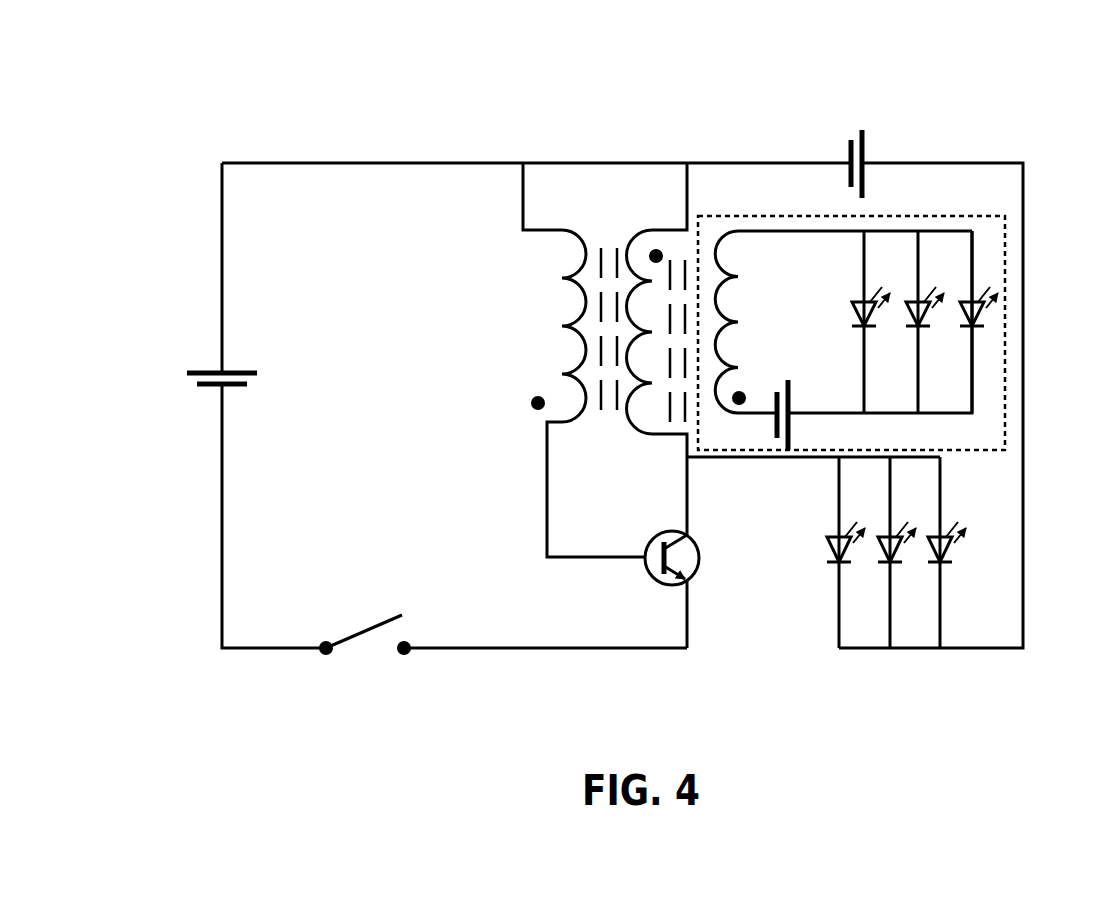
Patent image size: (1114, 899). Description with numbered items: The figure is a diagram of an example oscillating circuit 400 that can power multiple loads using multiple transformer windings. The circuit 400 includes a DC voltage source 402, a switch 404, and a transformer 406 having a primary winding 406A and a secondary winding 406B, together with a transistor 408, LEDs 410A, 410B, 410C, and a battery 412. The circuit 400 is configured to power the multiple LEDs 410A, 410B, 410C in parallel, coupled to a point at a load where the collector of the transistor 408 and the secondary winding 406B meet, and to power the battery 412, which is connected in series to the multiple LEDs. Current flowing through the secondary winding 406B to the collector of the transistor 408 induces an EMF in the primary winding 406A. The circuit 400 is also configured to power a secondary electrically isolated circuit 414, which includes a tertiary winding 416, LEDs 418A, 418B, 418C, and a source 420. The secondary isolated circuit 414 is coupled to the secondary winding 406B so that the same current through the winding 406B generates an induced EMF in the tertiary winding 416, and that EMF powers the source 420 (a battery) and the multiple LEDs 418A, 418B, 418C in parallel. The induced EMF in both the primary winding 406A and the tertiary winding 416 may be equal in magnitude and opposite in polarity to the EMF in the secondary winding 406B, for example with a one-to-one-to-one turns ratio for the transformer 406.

The oscillating circuit 400 is at (209, 76).
The DC voltage source 402 is at (250, 371).
The switch 404 is at (373, 628).
The transformer 406 is at (554, 377).
The primary winding 406A is at (582, 309).
The secondary winding 406B is at (641, 231).
The transistor 408 is at (697, 572).
The LED 410A is at (835, 546).
The LED 410B is at (880, 546).
The LED 410C is at (943, 563).
The battery 412 is at (862, 141).
The secondary isolated circuit 414 is at (1005, 417).
The tertiary winding 416 is at (718, 353).
The LED 418A is at (857, 299).
The LED 418B is at (908, 318).
The LED 418C is at (981, 311).
The source 420 is at (793, 446).